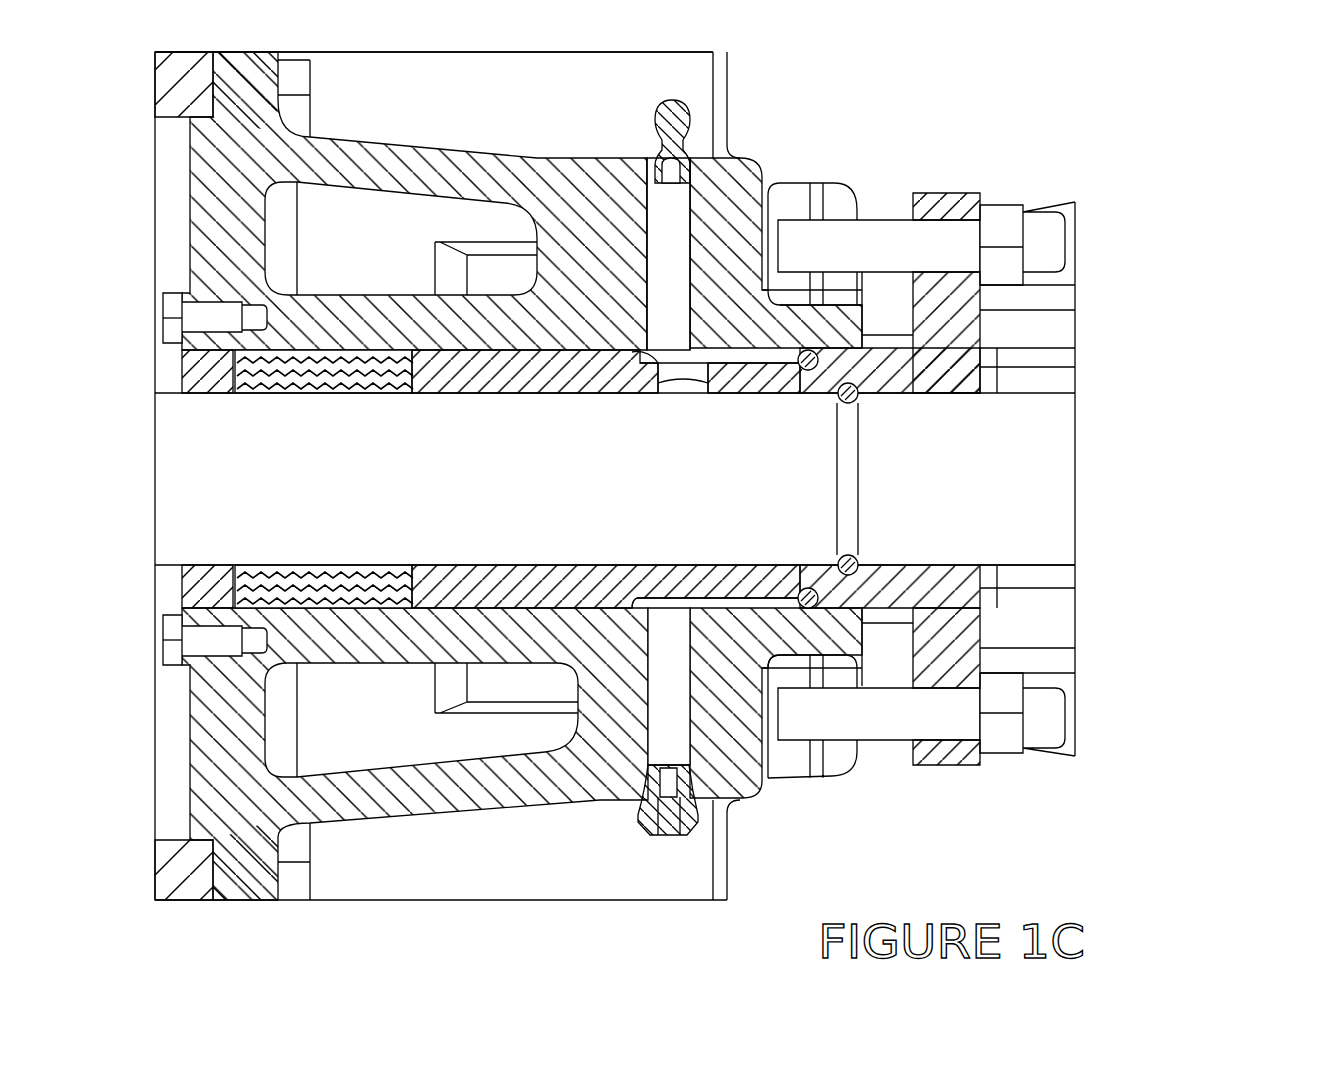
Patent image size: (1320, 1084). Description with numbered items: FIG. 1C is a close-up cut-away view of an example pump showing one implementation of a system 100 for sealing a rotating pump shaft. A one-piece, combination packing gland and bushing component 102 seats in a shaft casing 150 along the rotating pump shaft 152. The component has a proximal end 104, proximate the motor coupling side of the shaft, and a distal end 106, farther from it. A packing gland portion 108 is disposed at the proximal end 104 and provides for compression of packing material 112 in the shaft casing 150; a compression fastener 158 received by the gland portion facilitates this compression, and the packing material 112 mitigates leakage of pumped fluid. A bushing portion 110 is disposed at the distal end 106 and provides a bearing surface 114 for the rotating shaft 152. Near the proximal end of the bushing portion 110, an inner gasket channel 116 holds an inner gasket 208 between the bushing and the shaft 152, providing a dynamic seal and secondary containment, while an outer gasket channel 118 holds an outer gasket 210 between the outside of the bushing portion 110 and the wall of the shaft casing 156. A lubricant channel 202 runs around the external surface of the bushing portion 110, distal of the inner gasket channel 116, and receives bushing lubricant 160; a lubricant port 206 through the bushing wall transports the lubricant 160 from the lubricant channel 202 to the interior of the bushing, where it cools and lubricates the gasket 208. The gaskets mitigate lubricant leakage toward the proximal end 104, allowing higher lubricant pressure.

The system 100 is at (1102, 117).
The packing gland and bushing component 102 is at (962, 166).
The proximal end 104 is at (992, 381).
The distal end 106 is at (403, 556).
The packing gland portion 108 is at (965, 338).
The bushing portion 110 is at (540, 612).
The packing material 112 is at (240, 563).
The bearing surface 114 is at (595, 563).
The inner gasket channel 116 is at (866, 414).
The outer gasket channel 118 is at (800, 345).
The shaft casing 150 is at (563, 342).
The rotating pump shaft 152 is at (1053, 488).
The wall of the shaft casing 156 is at (783, 606).
The compression fastener 158 is at (962, 747).
The bushing lubricant 160 is at (670, 200).
The lubricant channel 202 is at (645, 358).
The lubricant port 206 is at (681, 404).
The inner gasket 208 is at (853, 552).
The outer gasket 210 is at (796, 372).